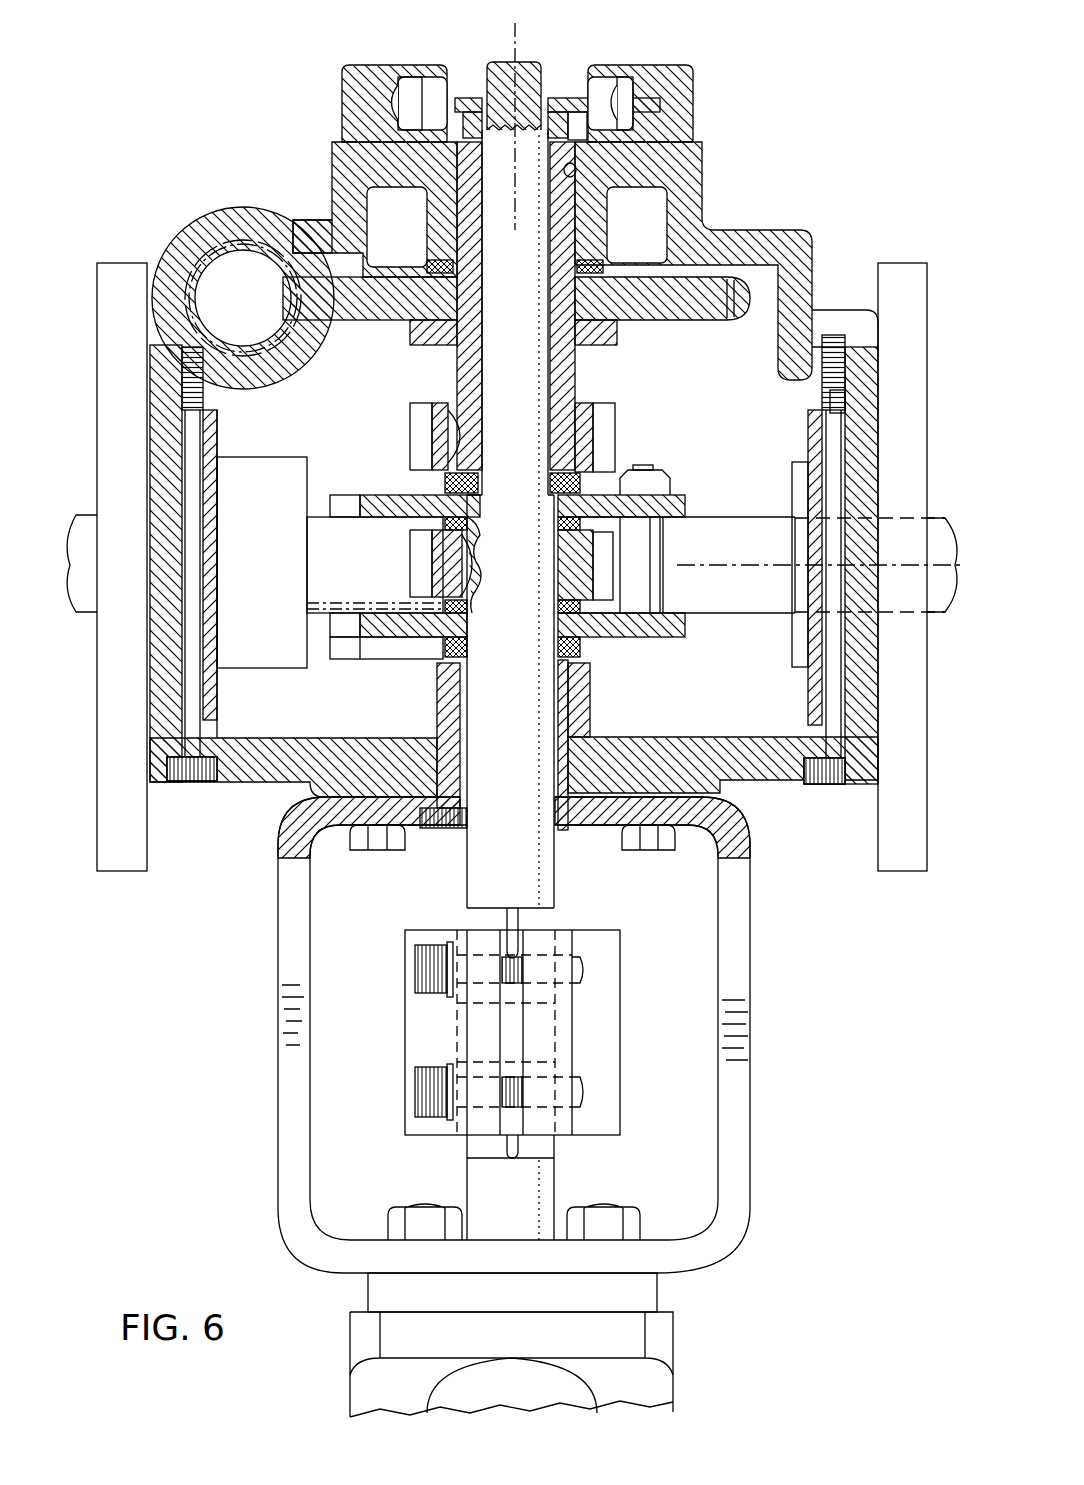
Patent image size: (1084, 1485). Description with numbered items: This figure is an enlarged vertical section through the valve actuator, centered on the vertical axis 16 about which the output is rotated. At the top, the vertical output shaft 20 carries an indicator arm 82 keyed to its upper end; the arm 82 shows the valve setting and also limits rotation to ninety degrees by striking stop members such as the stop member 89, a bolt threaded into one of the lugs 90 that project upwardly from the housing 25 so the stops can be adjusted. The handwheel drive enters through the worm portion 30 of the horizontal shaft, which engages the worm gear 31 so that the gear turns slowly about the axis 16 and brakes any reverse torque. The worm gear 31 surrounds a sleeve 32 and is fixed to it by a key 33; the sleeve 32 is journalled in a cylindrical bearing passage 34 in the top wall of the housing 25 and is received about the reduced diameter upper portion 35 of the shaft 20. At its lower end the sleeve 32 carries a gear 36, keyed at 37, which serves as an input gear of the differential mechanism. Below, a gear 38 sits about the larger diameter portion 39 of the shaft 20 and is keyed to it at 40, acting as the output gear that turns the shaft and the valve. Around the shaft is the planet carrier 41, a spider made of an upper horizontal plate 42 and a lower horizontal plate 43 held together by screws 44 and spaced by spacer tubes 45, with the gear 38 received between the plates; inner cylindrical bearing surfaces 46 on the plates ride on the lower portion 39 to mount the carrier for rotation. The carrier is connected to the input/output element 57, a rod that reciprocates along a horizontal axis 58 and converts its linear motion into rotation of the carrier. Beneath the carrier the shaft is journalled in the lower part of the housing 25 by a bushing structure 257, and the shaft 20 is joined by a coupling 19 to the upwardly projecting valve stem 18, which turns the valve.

The vertical axis 16 is at (517, 49).
The stem 18 is at (540, 1187).
The coupling 19 is at (610, 945).
The vertical output shaft 20 is at (500, 370).
The housing 25 is at (792, 238).
The worm portion 30 is at (235, 243).
The worm gear 31 is at (685, 293).
The sleeve 32 is at (557, 292).
The key 33 is at (580, 293).
The cylindrical bearing passage 34 is at (576, 178).
The reduced diameter upper portion 35 is at (553, 362).
The gear 36 is at (585, 428).
The key 37 is at (440, 432).
The gear 38 is at (438, 557).
The larger diameter portion 39 is at (500, 497).
The key 40 is at (476, 578).
The planet carrier 41 is at (656, 647).
The upper horizontal plate 42 is at (687, 495).
The lower horizontal plate 43 is at (687, 633).
The screws 44 is at (663, 473).
The spacer tubes 45 is at (653, 593).
The inner cylindrical bearing surfaces 46 is at (555, 505).
The input/output element 57 is at (943, 523).
The horizontal axis 58 is at (733, 567).
The indicator arm 82 is at (572, 98).
The stop member 89 is at (433, 58).
The lugs 90 is at (628, 77).
The bushing structure 257 is at (590, 708).